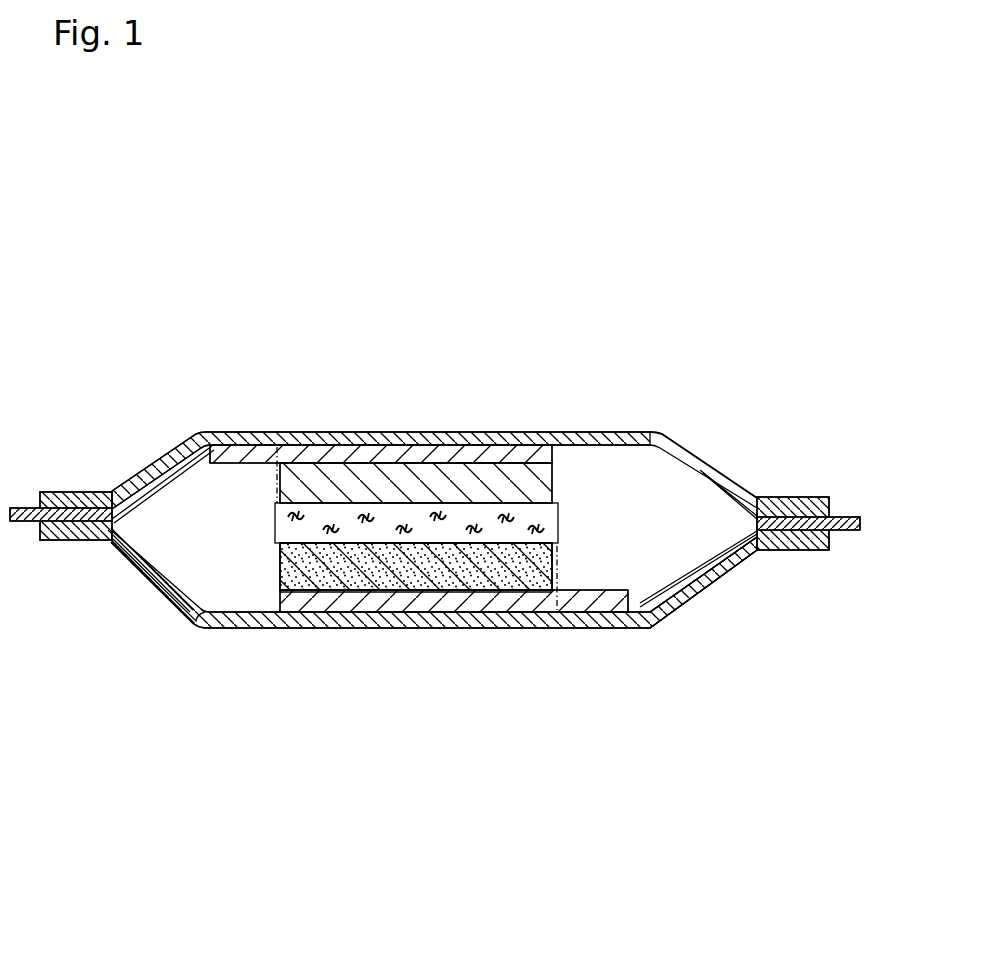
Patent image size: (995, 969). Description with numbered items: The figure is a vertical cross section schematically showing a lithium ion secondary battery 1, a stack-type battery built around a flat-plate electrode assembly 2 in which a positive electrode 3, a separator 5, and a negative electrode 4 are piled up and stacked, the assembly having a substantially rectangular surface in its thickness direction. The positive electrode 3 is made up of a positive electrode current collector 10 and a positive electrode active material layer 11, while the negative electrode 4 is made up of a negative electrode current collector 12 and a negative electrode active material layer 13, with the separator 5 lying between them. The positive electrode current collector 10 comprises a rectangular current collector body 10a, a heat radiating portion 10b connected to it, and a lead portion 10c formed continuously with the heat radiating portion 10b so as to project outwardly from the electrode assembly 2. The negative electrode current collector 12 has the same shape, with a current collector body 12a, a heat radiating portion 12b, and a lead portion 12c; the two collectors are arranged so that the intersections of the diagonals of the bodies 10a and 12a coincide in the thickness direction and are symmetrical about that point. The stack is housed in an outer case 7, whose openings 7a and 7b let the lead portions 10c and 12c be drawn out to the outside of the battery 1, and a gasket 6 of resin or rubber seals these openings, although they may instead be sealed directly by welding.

The lithium ion secondary battery 1 is at (97, 133).
The electrode assembly 2 is at (582, 505).
The positive electrode 3 is at (627, 835).
The negative electrode 4 is at (280, 250).
The separator 5 is at (473, 510).
The gasket 6 is at (58, 541).
The outer case 7 is at (678, 452).
The opening 7a is at (830, 531).
The opening 7b is at (35, 495).
The positive electrode current collector 10 is at (723, 750).
The current collector body 10a is at (478, 598).
The heat radiating portion 10b is at (597, 600).
The lead portion 10c is at (670, 623).
The positive electrode active material layer 11 is at (413, 592).
The negative electrode current collector 12 is at (387, 335).
The current collector body 12a is at (322, 437).
The heat radiating portion 12b is at (247, 437).
The lead portion 12c is at (171, 462).
The negative electrode active material layer 13 is at (417, 485).